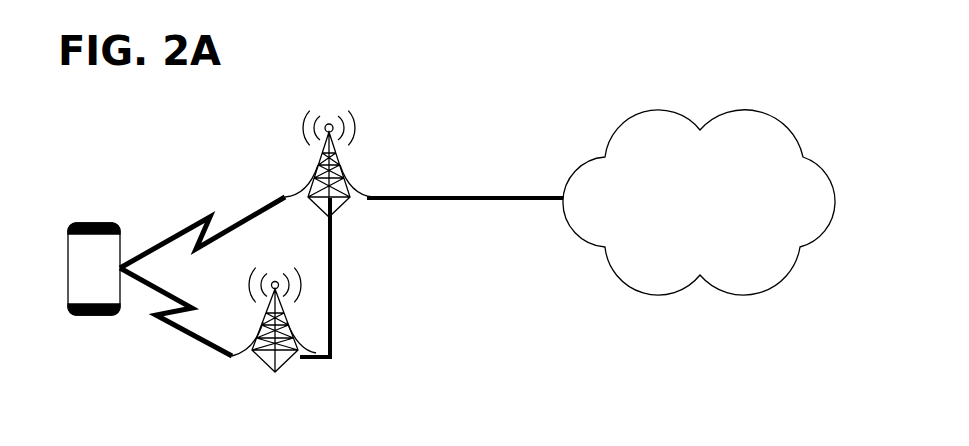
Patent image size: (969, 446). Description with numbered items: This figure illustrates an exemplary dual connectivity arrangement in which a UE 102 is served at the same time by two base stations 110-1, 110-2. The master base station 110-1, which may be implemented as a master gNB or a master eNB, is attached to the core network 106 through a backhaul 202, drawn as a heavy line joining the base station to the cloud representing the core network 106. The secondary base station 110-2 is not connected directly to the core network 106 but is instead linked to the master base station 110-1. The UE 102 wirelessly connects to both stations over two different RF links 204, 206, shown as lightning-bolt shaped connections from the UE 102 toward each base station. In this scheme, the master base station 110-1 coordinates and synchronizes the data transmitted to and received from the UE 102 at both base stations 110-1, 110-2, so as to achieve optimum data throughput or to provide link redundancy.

The UE 102 is at (106, 222).
The RF link 204 is at (208, 216).
The RF link 206 is at (176, 328).
The master base station 110-1 is at (353, 182).
The secondary base station 110-2 is at (332, 350).
The backhaul 202 is at (517, 200).
The core network 106 is at (699, 202).